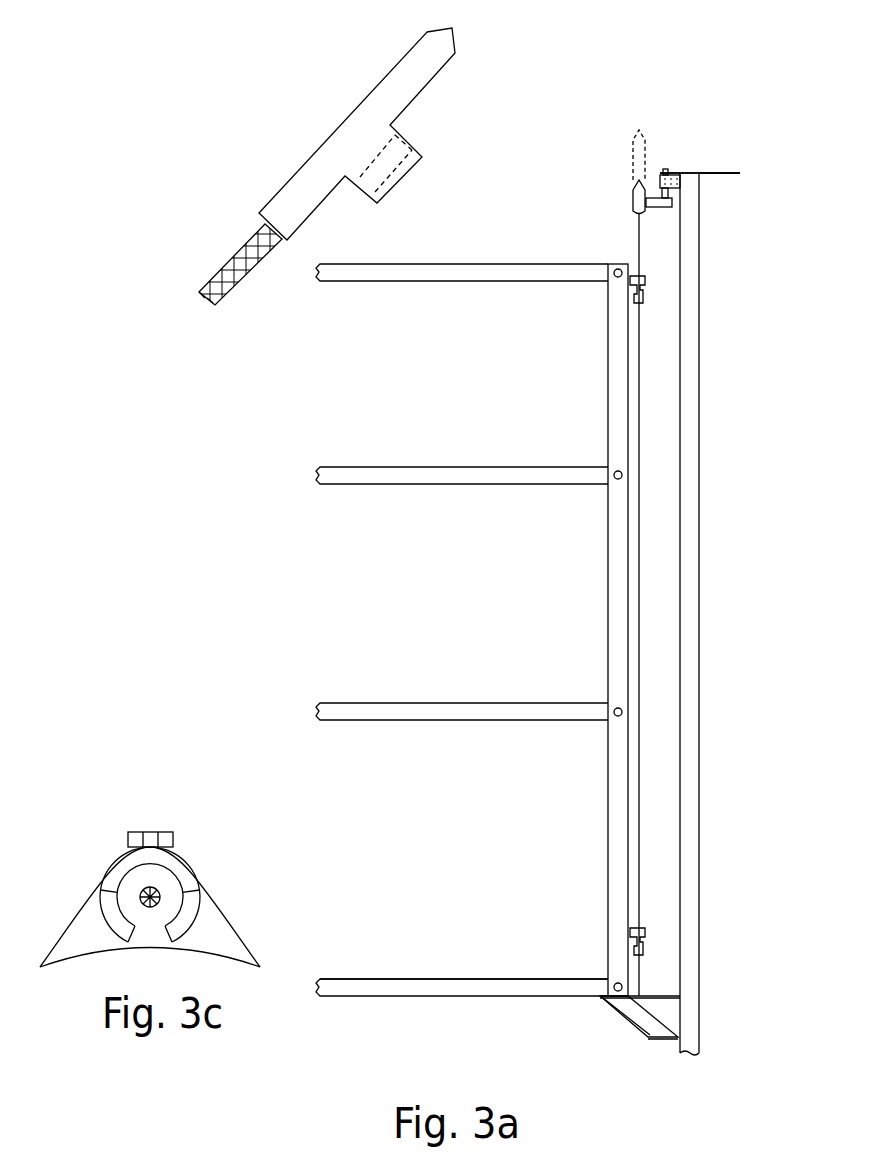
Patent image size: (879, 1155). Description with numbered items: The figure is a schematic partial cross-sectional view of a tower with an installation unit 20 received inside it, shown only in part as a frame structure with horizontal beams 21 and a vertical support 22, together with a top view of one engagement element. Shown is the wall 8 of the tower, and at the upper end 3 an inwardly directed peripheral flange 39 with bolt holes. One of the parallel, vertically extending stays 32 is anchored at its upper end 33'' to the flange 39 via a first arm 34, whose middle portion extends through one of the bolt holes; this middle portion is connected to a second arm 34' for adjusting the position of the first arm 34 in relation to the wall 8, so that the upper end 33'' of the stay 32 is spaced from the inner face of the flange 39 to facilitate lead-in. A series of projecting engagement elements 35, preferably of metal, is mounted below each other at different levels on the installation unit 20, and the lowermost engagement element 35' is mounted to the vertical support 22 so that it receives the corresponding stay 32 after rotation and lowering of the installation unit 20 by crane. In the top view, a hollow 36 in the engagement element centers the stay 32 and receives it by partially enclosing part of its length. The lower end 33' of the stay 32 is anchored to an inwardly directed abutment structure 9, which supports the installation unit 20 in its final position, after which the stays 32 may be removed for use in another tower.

In FIG. 3A, the upper end 3 is at (697, 166).
In FIG. 3A, the wall 8 is at (690, 620).
In FIG. 3A, the abutment structures 9 is at (645, 1022).
In FIG. 3A, the installation unit 20 is at (358, 1019).
In FIG. 3A, the horizontal beams 21 is at (395, 987).
In FIG. 3A, the vertical support 22 is at (617, 868).
In FIG. 3A, the stays 32 is at (640, 366).
In FIG. 3C, the stays 32 is at (155, 890).
In FIG. 3A, the lower pin 33' is at (681, 984).
In FIG. 3A, the upper end of the stay 33'' is at (417, 171).
In FIG. 3A, the first arm 34 is at (662, 230).
In FIG. 3A, the second arm 34' is at (740, 205).
In FIG. 3A, the engagement elements 35 is at (696, 303).
In FIG. 3A, the lowermost engagement element 35' is at (714, 936).
In FIG. 3C, the hollow 36 is at (126, 858).
In FIG. 3A, the flange 39 is at (660, 175).